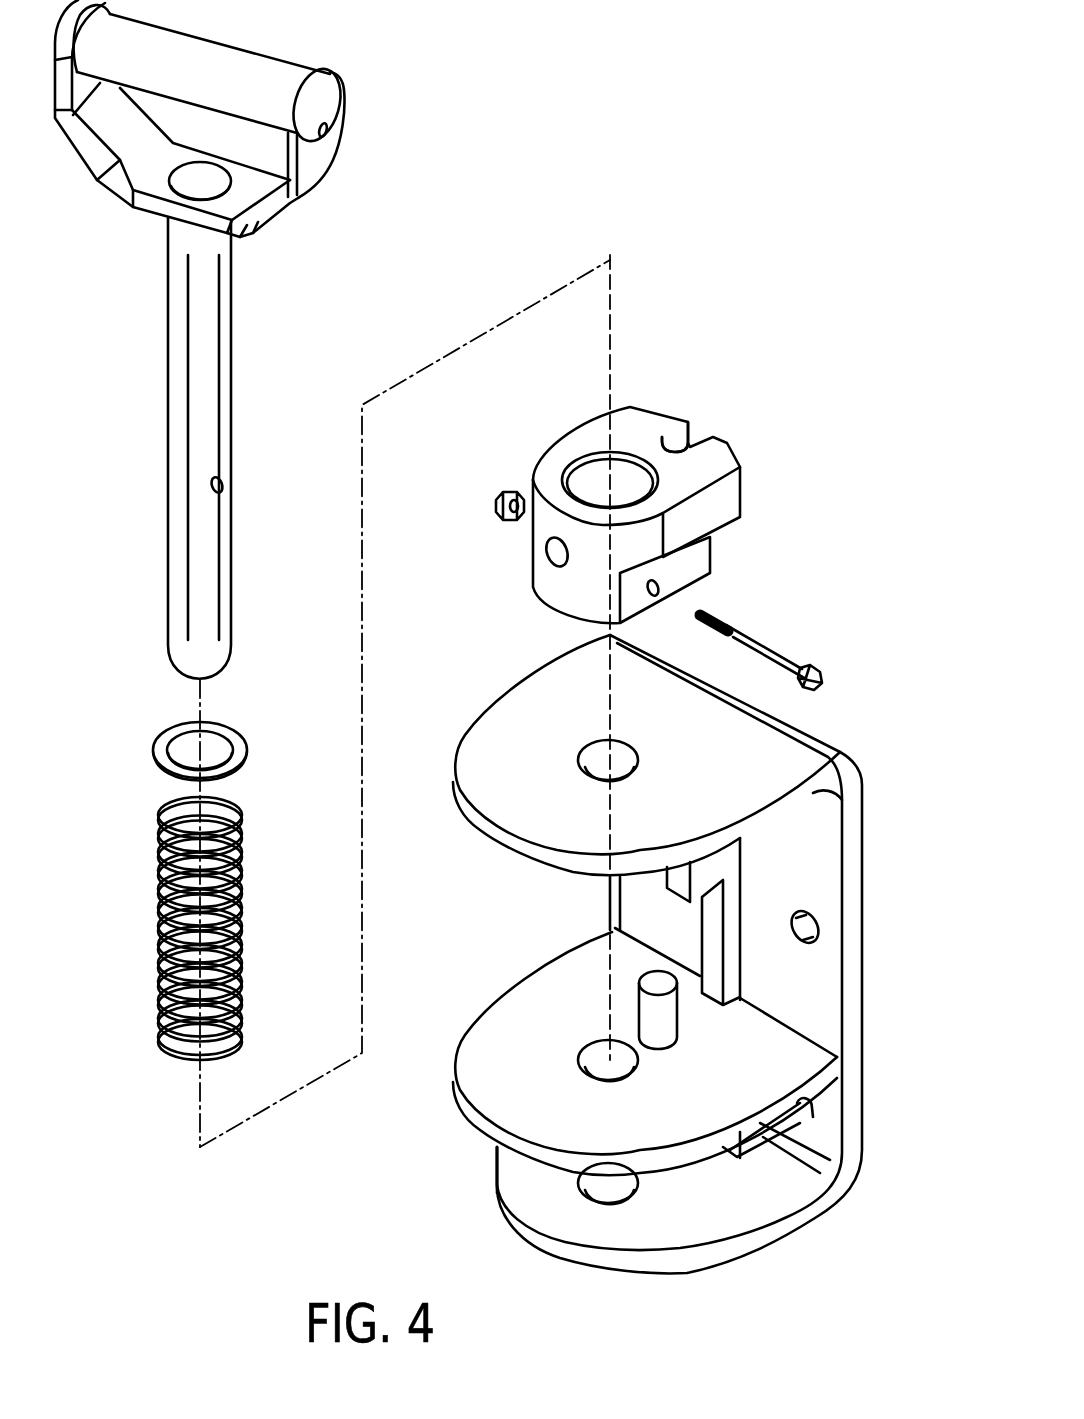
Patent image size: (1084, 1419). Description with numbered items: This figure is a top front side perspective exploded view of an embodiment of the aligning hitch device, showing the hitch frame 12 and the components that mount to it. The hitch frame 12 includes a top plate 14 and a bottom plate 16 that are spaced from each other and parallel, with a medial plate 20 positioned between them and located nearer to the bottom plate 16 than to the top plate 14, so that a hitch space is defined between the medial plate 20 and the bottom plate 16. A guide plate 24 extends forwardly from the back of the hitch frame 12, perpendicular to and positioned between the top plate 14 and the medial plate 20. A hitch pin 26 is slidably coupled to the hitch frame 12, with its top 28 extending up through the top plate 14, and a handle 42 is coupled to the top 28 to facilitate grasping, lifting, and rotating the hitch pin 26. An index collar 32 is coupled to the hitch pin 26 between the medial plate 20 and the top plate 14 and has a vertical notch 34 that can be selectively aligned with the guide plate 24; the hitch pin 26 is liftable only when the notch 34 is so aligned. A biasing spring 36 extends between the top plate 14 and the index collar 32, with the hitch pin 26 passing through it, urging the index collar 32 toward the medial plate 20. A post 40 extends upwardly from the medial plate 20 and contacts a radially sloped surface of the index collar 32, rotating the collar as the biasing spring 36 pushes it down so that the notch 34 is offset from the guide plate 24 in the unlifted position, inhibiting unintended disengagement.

The hitch frame 12 is at (853, 873).
The top plate 14 is at (490, 772).
The bottom plate 16 is at (660, 1227).
The medial plate 20 is at (487, 1071).
The guide plate 24 is at (710, 870).
The hitch pin 26 is at (215, 405).
The top of the hitch pin 28 is at (193, 183).
The index collar 32 is at (712, 472).
The vertical notch 34 is at (703, 428).
The biasing spring 36 is at (160, 932).
The post 40 is at (660, 1018).
The handle 42 is at (257, 73).